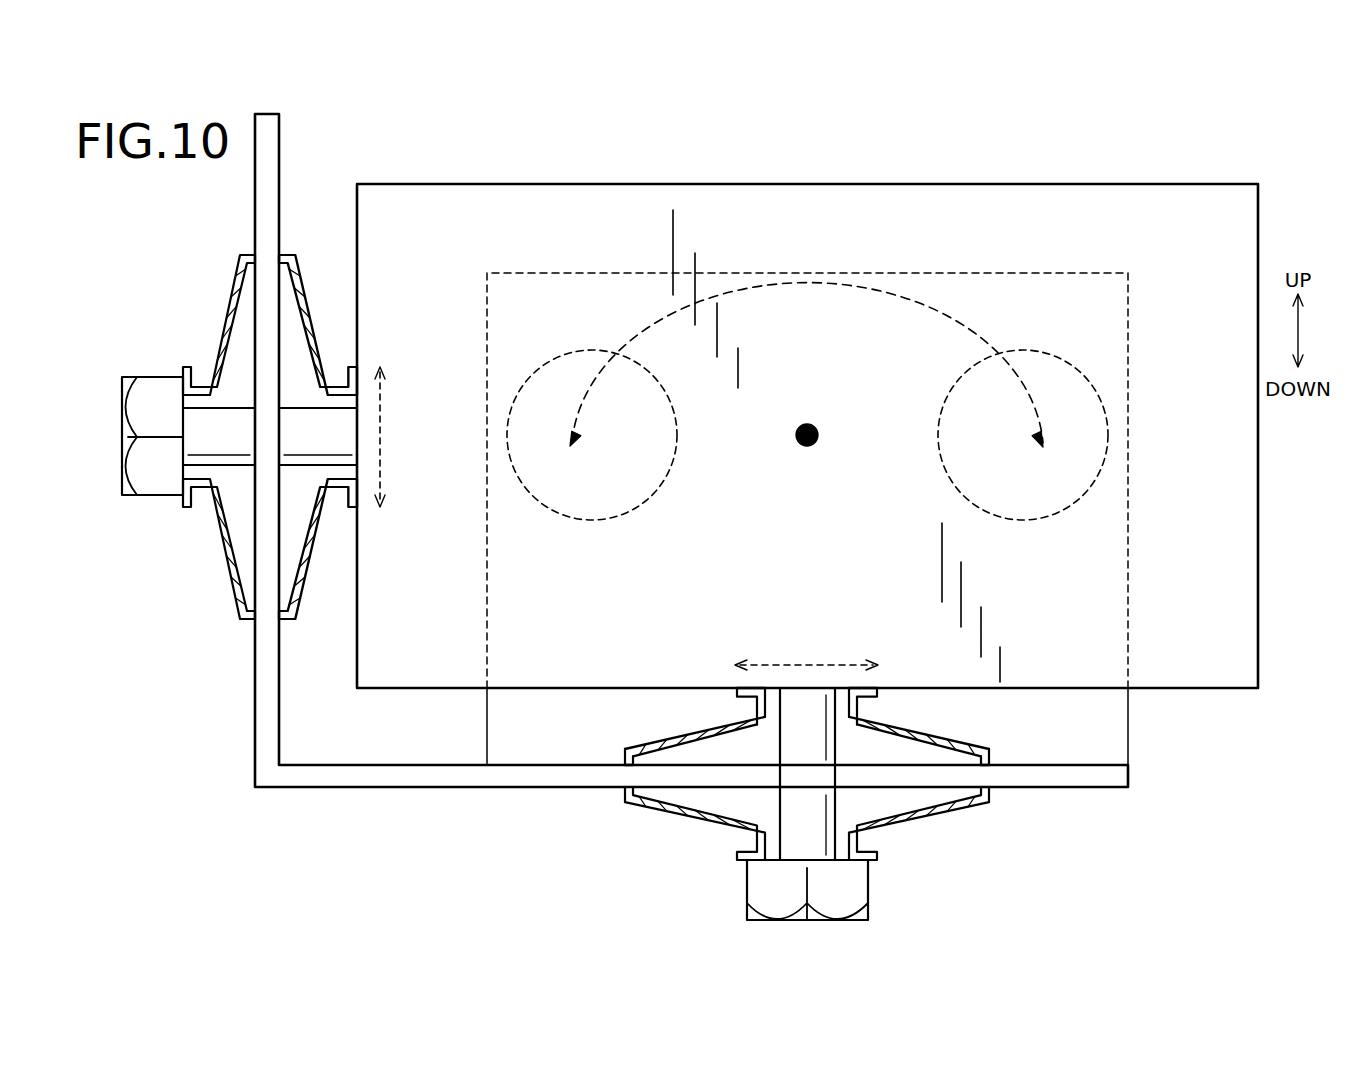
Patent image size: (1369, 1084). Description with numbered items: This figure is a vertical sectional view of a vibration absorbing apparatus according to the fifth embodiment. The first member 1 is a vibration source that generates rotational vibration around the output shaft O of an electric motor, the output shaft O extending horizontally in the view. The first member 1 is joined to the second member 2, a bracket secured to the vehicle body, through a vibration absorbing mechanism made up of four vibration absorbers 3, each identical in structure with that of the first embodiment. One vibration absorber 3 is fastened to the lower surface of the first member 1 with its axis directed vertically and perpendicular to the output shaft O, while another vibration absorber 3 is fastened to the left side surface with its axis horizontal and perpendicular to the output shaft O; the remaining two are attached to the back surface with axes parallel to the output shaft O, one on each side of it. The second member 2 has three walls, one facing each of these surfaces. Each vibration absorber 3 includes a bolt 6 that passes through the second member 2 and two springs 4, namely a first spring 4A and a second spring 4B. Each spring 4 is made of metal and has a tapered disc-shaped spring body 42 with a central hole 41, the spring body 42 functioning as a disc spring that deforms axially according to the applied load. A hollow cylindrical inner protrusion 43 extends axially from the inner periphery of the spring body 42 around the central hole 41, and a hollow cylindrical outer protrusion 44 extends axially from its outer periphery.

The first member 1 is at (1237, 210).
The second member 2 is at (410, 792).
The vibration absorber 3 is at (548, 353).
The spring 4 is at (212, 527).
The first spring 4A is at (801, 726).
The second spring 4B is at (725, 833).
The central hole 41 is at (863, 706).
The spring body 42 is at (919, 737).
The inner protrusion 43 is at (751, 706).
The outer protrusion 44 is at (629, 757).
The bolt 6 is at (153, 482).
The output shaft O is at (807, 424).